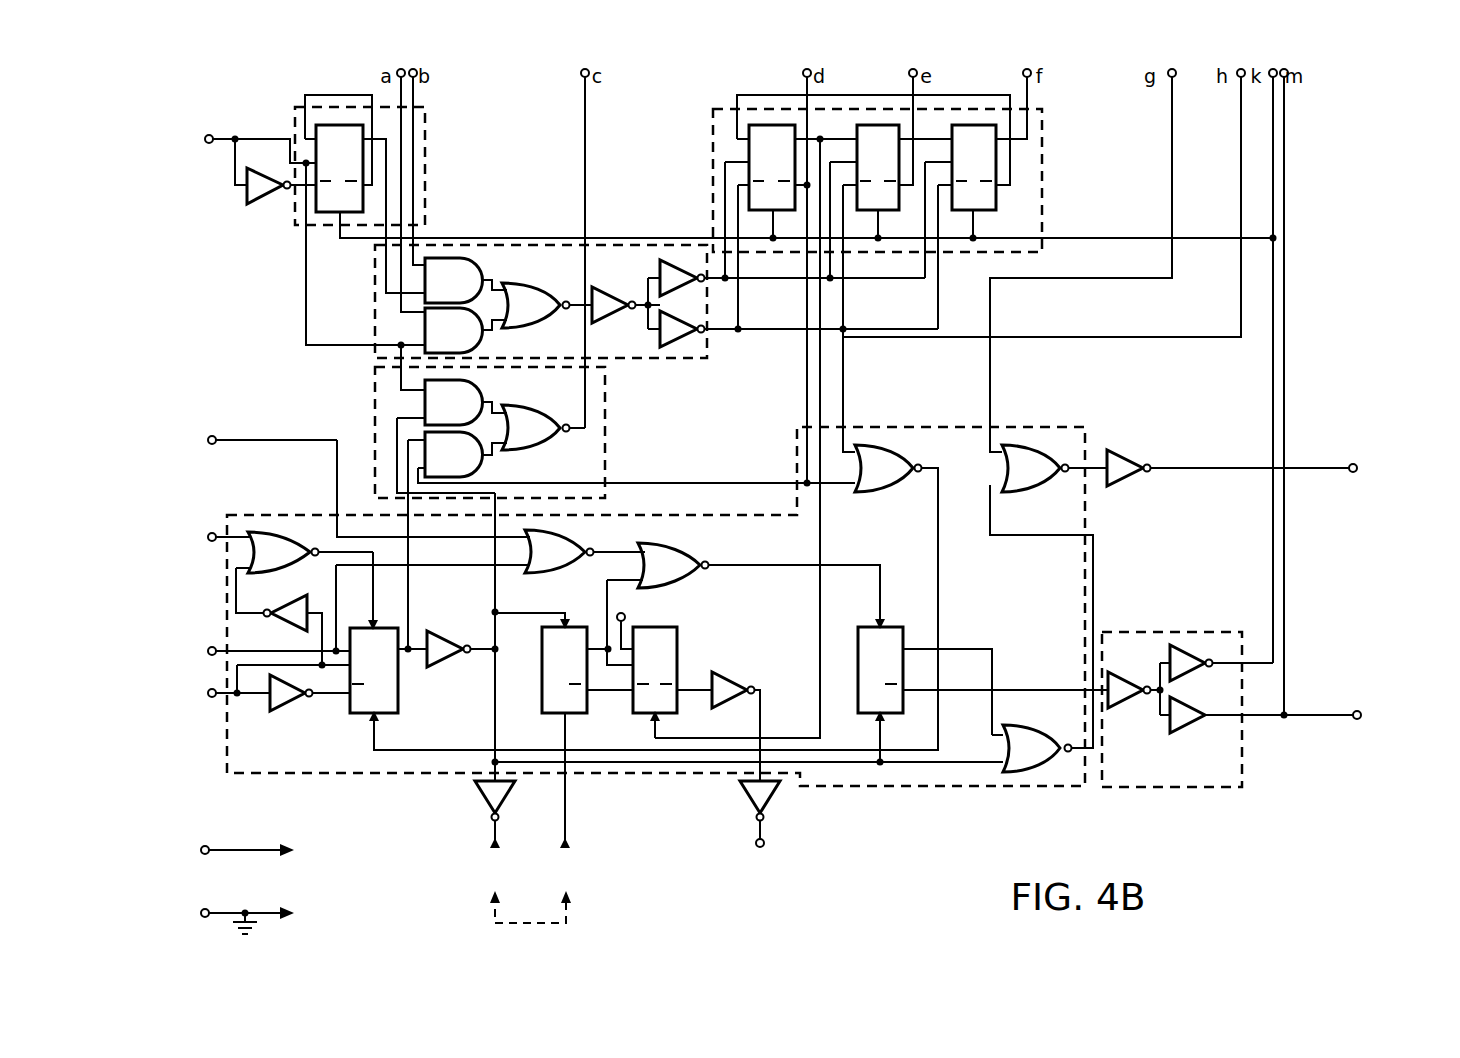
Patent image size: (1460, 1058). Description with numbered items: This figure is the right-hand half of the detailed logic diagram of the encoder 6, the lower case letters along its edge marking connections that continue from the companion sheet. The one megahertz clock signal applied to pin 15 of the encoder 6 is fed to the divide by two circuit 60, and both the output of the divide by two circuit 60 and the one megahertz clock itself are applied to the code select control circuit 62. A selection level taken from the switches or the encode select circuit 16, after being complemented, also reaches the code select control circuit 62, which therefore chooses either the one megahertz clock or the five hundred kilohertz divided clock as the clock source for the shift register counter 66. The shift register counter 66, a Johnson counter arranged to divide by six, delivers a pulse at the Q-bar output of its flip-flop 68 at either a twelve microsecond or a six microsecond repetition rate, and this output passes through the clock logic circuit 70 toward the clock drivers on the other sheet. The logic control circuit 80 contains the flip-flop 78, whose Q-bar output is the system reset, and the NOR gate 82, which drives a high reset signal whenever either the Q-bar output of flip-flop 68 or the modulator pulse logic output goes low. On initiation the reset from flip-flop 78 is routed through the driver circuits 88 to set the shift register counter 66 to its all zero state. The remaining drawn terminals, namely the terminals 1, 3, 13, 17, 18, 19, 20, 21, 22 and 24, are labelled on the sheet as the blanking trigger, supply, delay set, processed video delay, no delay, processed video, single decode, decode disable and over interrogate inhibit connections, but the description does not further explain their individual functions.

The blanking trigger output terminal 1 is at (1353, 464).
The VSS supply terminal 3 is at (208, 910).
The encoder 6 is at (1322, 329).
The VCC supply terminal 13 is at (208, 847).
The pin 15 of encoder 15 is at (212, 137).
The encode select circuit 16 is at (763, 840).
The delay set terminal 17 is at (569, 840).
The processed video delay terminal 18 is at (208, 651).
The no delay terminal 19 is at (215, 437).
The processed video terminal 20 is at (208, 693).
The single decode terminal 21 is at (210, 541).
The decode disable terminal 22 is at (491, 840).
The over interrogate inhibit terminal 24 is at (1357, 711).
The divide by 2 circuit 60 is at (425, 112).
The code select control circuit 62 is at (375, 270).
The shift register counter 66 is at (966, 416).
The flip-flop 68 is at (764, 212).
The clock logic circuit 70 is at (375, 370).
The flip-flop 78 is at (898, 627).
The logic control circuit 80 is at (797, 432).
The NOR gate 82 is at (895, 447).
The driver circuits 88 is at (1208, 632).